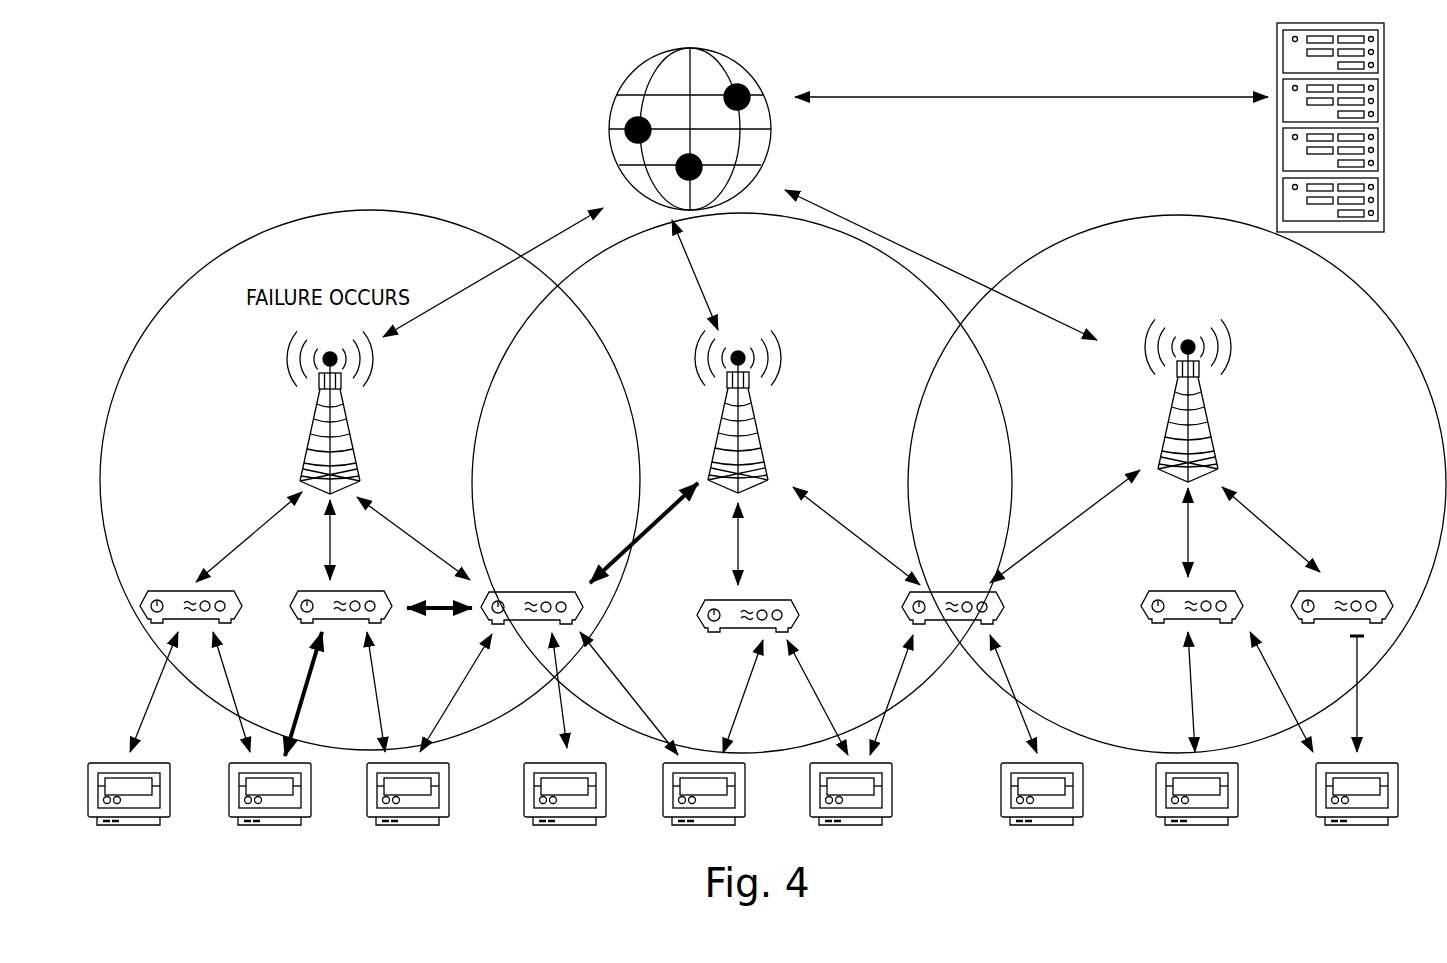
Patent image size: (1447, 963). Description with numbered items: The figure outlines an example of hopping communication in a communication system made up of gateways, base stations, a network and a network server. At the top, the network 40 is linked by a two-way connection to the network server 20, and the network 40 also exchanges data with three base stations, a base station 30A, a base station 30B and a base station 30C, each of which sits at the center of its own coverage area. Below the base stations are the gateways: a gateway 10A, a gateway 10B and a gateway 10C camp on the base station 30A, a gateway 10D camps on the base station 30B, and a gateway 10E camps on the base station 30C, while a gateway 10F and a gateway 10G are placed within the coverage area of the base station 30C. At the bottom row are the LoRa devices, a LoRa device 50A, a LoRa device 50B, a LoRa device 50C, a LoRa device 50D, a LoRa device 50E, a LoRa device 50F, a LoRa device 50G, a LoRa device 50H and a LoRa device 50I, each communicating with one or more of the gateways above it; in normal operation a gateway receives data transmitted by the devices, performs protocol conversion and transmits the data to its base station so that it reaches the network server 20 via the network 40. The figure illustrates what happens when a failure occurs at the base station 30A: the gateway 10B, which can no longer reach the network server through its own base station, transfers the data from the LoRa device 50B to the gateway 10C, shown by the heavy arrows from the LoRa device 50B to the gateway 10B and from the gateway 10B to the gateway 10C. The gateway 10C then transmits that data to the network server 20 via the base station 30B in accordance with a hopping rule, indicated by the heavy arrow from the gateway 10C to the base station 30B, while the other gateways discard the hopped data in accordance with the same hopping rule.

The network 40 is at (752, 79).
The network server 20 is at (1388, 160).
The base station 30A is at (365, 466).
The base station 30B is at (776, 466).
The base station 30C is at (1224, 460).
The gateway 10A is at (244, 592).
The gateway 10B is at (372, 590).
The gateway 10C is at (508, 590).
The gateway 10D is at (780, 598).
The gateway 10E is at (930, 590).
The gateway 10F is at (1220, 590).
The gateway 10G is at (1370, 590).
The LoRa device 50A is at (146, 828).
The LoRa device 50B is at (292, 828).
The LoRa device 50C is at (404, 830).
The LoRa device 50D is at (580, 828).
The LoRa device 50E is at (724, 826).
The LoRa device 50F is at (854, 830).
The LoRa device 50G is at (1049, 828).
The LoRa device 50H is at (1196, 828).
The LoRa device 50I is at (1364, 826).